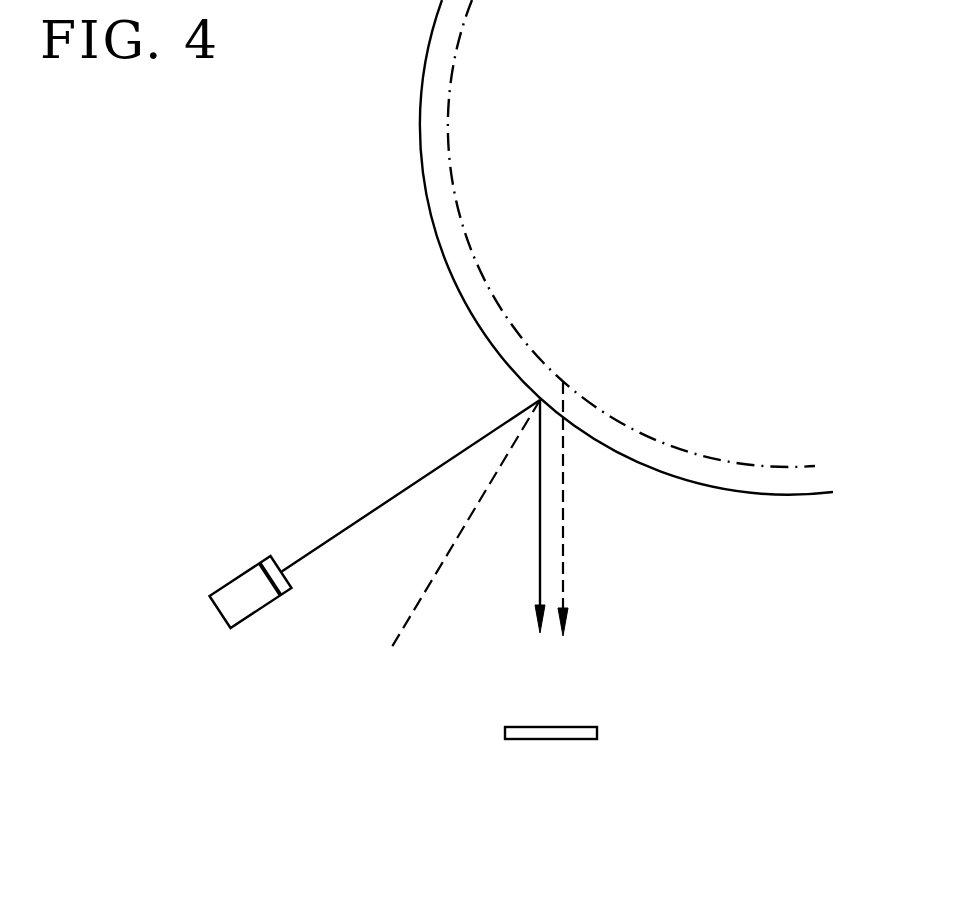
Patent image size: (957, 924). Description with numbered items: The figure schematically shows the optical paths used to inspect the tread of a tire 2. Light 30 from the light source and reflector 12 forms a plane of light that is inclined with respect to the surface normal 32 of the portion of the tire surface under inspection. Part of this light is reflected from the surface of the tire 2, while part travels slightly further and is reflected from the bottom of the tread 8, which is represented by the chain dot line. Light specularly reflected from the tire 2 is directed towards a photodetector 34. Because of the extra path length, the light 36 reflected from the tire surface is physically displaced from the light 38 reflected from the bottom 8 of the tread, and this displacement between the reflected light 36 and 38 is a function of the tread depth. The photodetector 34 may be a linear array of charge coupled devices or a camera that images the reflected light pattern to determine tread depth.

The tire 2 is at (505, 115).
The bottom of the tread 8 is at (488, 283).
The reflector 12 is at (217, 610).
The light 30 is at (362, 515).
The surface normal 32 is at (425, 597).
The photodetector 34 is at (527, 740).
The light reflected from the surface of the tire 36 is at (538, 543).
The light reflected from the bottom of the tread 38 is at (563, 513).